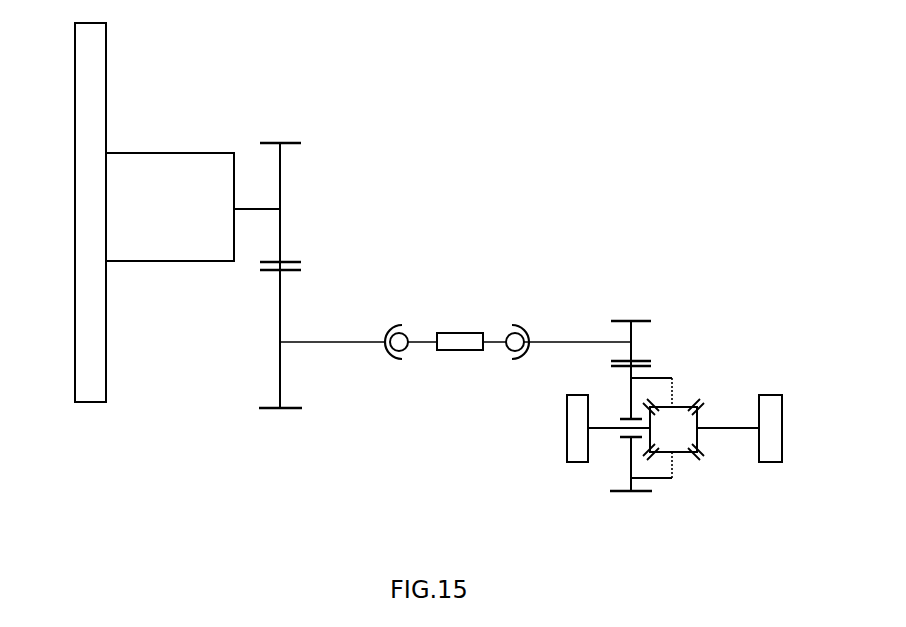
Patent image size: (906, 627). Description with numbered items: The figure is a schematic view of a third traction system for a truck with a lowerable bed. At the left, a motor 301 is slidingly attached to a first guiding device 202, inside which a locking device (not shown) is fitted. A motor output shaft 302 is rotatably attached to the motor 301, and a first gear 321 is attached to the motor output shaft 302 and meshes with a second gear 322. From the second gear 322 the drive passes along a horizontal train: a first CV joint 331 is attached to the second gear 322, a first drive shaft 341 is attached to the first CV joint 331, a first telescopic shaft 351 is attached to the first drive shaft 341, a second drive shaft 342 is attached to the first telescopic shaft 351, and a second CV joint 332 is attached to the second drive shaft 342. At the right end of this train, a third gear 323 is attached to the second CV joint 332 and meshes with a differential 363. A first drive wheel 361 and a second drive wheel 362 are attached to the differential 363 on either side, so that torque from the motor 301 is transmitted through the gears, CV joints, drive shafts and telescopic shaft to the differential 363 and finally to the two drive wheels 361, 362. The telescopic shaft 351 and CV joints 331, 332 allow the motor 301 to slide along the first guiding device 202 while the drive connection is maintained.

The first guiding device 202 is at (90, 405).
The motor 301 is at (171, 152).
The motor output shaft 302 is at (246, 209).
The first gear 321 is at (291, 143).
The second gear 322 is at (268, 410).
The third gear 323 is at (642, 322).
The first CV joint 331 is at (394, 365).
The second CV joint 332 is at (519, 365).
The first drive shaft 341 is at (422, 360).
The second drive shaft 342 is at (492, 360).
The first telescopic shaft 351 is at (461, 360).
The first drive wheel 361 is at (577, 465).
The second drive wheel 362 is at (775, 465).
The differential 363 is at (633, 497).